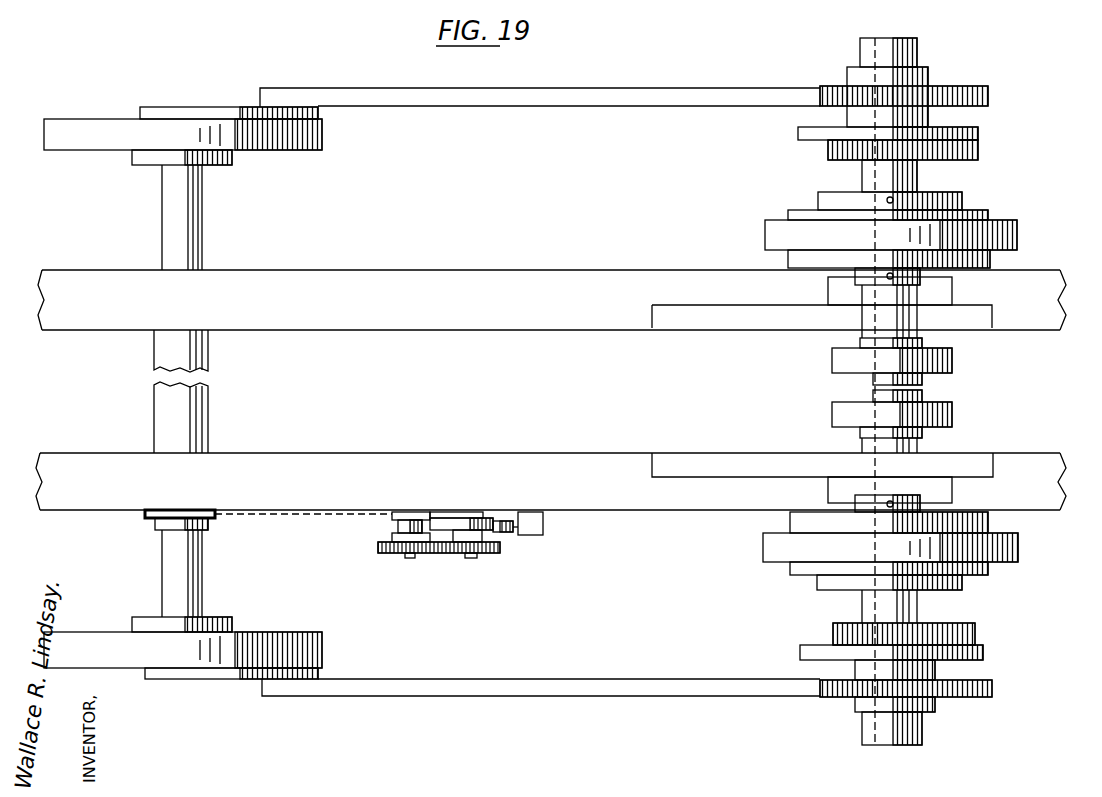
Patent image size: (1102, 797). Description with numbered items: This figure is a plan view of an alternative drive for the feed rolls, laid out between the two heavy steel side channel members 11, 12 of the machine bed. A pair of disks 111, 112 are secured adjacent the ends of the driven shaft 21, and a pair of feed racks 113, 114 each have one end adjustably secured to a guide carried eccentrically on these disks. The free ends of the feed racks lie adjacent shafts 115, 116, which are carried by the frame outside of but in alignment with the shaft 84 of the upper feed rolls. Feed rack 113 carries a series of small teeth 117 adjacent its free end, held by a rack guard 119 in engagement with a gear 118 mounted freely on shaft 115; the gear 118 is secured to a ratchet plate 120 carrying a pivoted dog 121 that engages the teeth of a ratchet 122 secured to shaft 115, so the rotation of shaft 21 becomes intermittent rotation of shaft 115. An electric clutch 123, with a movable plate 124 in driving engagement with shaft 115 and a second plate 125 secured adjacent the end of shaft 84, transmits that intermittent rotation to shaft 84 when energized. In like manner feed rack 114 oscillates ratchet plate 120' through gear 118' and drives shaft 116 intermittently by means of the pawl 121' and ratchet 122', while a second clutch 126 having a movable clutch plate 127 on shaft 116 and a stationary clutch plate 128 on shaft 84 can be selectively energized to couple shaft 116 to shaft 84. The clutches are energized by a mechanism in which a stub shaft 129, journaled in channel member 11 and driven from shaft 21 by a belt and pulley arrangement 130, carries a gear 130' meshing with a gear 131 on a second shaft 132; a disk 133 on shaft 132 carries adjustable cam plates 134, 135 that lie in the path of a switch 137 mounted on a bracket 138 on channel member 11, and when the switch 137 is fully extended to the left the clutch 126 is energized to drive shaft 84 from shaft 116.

The side channel member 11 is at (353, 462).
The side channel member 12 is at (396, 268).
The drive shaft 21 is at (196, 586).
The shaft of the upper feed rolls 84 is at (915, 396).
The disk 111 is at (252, 642).
The disk 112 is at (118, 110).
The feed rack 113 is at (582, 674).
The feed rack 114 is at (586, 82).
The shaft 115 is at (880, 748).
The shaft 116 is at (885, 48).
The teeth 117 is at (970, 700).
The gear 118 is at (892, 708).
The gear 118' is at (904, 90).
The rack guard 119 is at (932, 716).
The ratchet plate 120 is at (860, 658).
The ratchet plate 120' is at (857, 135).
The dog 121 is at (997, 622).
The pawl 121' is at (951, 168).
The ratchet 122 is at (875, 629).
The ratchet 122' is at (857, 158).
The electric clutch 123 is at (750, 576).
The movable plate 124 is at (1020, 550).
The second plate 125 is at (972, 513).
The second clutch 126 is at (1018, 221).
The movable clutch plate 127 is at (766, 236).
The stationary clutch plate 128 is at (990, 262).
The stub shaft 129 is at (406, 560).
The belt and pulley arrangement 130 is at (322, 531).
The gear 130' is at (406, 551).
The gear 131 is at (505, 548).
The second shaft 132 is at (470, 560).
The disk 133 is at (440, 512).
The cam plate 134 is at (514, 534).
The cam plate 135 is at (500, 512).
The switch 137 is at (517, 524).
The bracket 138 is at (543, 526).